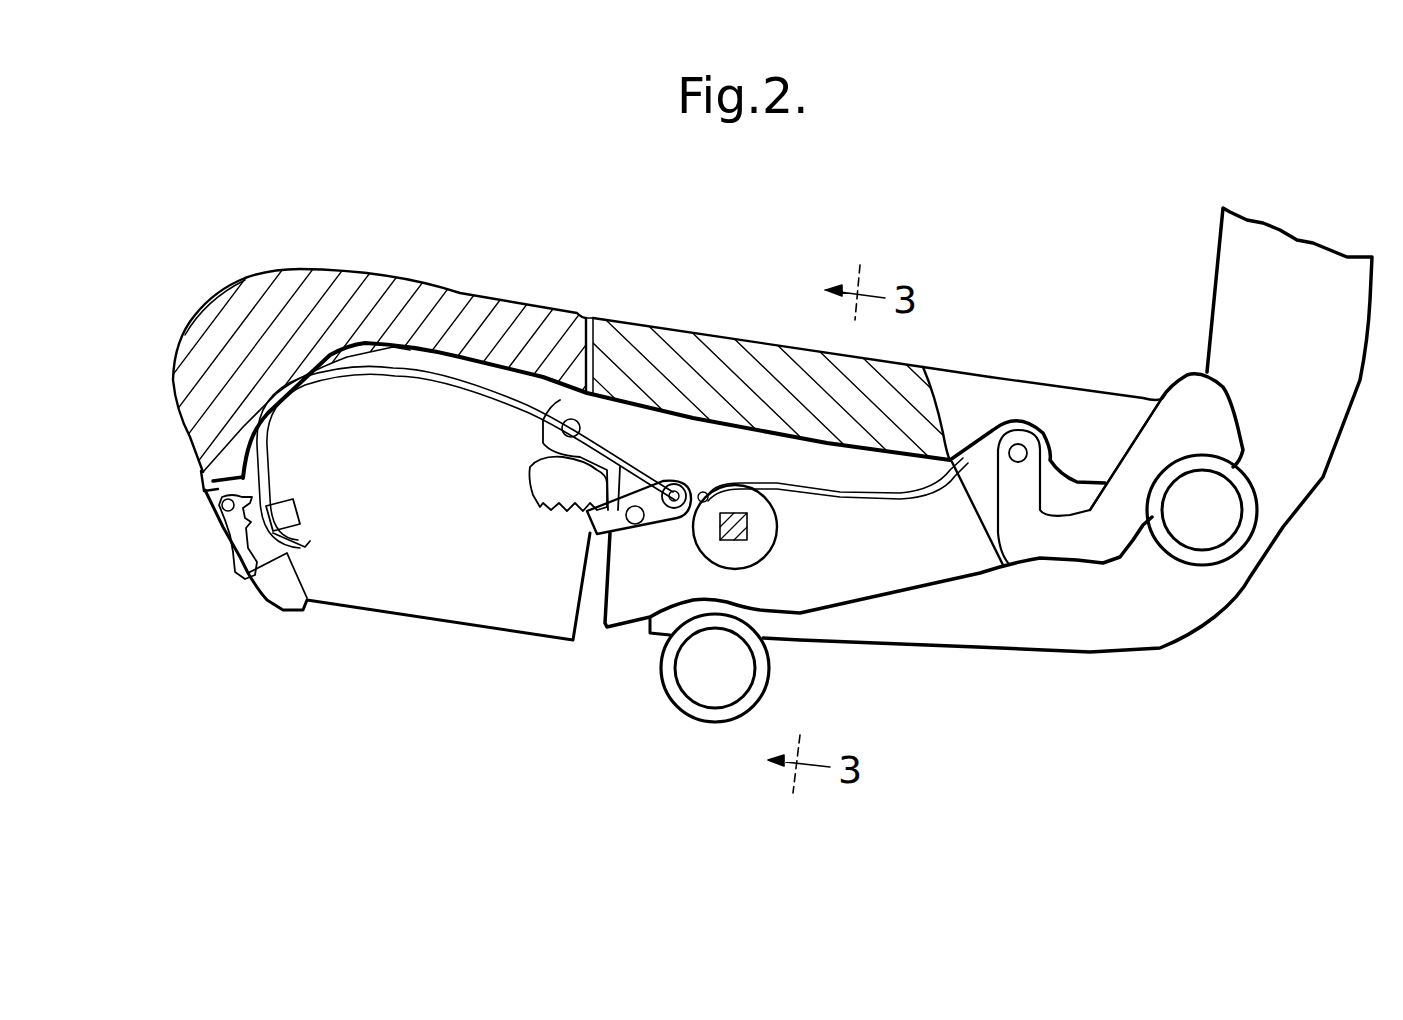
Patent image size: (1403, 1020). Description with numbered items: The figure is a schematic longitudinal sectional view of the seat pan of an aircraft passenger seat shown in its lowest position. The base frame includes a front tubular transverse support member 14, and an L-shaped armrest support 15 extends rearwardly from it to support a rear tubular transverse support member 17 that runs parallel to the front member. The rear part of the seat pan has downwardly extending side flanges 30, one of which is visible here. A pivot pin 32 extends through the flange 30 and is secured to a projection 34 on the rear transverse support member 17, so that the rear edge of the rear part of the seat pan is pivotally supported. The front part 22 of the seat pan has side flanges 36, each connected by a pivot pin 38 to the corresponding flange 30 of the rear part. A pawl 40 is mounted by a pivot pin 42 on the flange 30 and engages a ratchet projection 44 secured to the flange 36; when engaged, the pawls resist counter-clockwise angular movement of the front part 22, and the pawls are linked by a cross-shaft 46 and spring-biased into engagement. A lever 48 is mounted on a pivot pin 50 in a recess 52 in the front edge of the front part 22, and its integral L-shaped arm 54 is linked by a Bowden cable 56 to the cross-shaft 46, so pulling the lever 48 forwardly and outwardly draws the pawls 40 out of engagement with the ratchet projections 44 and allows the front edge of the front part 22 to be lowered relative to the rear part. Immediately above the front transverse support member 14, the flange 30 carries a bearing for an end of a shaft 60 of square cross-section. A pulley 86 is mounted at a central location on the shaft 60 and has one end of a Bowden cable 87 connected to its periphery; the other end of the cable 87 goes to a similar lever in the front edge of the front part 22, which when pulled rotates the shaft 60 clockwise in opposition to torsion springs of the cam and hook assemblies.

The front tubular transverse support member 14 is at (668, 682).
The L-shaped armrest support 15 is at (1107, 630).
The rear tubular transverse support member 17 is at (1255, 512).
The front part of the seat pan 22 is at (390, 300).
The side flange 30 is at (878, 578).
The pivot pin 32 is at (1021, 446).
The projection 34 is at (1175, 400).
The side flange 36 is at (408, 600).
The pivot pin 38 is at (548, 431).
The pawl 40 is at (587, 525).
The pivot pin 42 is at (637, 524).
The ratchet projection 44 is at (530, 480).
The cross-shaft 46 is at (672, 484).
The lever 48 is at (224, 524).
The pivot pin 50 is at (218, 507).
The recess 52 is at (273, 585).
The L-shaped arm 54 is at (312, 543).
The Bowden cable 56 is at (391, 378).
The shaft 60 is at (750, 535).
The pulley 86 is at (765, 523).
The Bowden cable 87 is at (785, 482).